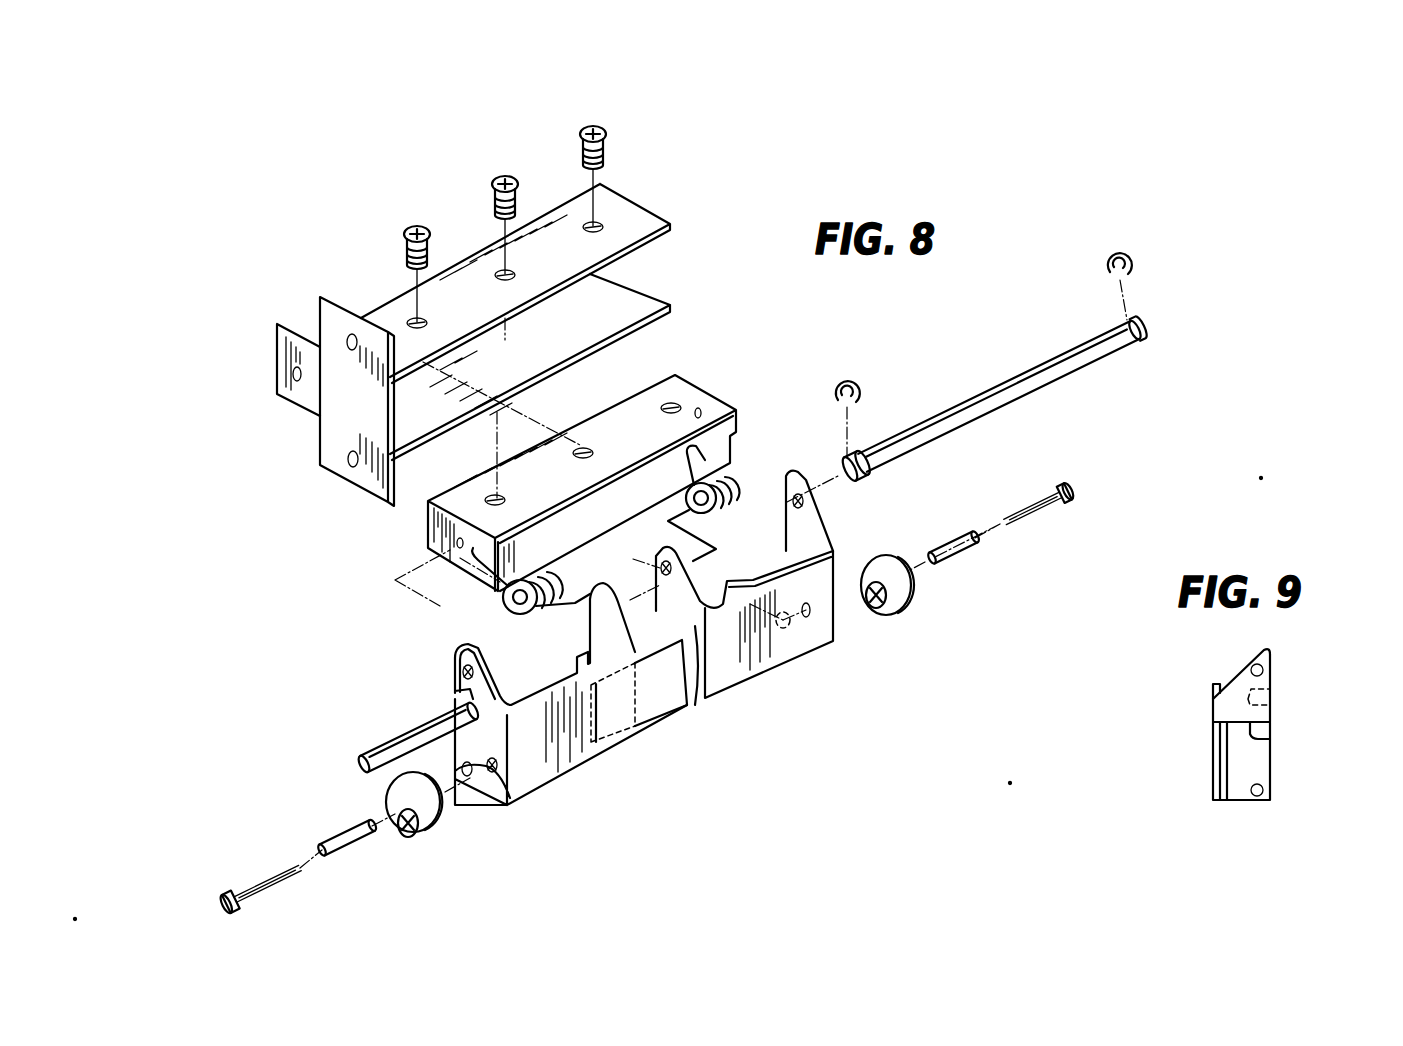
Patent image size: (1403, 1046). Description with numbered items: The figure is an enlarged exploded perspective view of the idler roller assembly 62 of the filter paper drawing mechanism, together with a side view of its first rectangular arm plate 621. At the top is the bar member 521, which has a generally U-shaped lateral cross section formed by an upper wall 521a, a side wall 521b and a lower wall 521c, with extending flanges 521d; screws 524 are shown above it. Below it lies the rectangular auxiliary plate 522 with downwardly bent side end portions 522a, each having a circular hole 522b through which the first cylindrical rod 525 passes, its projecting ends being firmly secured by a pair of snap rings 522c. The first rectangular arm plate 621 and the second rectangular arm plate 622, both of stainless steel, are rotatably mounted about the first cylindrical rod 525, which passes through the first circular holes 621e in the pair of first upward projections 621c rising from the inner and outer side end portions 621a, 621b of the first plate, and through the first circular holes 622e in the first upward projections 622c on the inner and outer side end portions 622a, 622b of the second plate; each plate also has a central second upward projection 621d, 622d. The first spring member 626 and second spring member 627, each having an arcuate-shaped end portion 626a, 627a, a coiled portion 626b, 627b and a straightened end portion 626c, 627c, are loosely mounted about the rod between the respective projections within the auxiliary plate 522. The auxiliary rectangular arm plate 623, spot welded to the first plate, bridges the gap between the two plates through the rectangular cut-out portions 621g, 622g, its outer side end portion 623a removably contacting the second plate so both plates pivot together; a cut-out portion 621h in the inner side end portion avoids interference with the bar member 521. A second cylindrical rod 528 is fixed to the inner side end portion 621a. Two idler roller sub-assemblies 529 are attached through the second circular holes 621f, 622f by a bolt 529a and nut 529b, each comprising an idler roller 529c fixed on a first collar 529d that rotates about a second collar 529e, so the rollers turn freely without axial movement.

In FIG. 8, the idler roller assembly 62 is at (260, 361).
In FIG. 8, the bar member 521 is at (483, 332).
In FIG. 8, the upper wall 521a is at (632, 200).
In FIG. 8, the side wall 521b is at (327, 393).
In FIG. 8, the lower wall 521c is at (648, 285).
In FIG. 8, the extending flanges 521d is at (318, 298).
In FIG. 8, the auxiliary plate 522 is at (575, 462).
In FIG. 8, the side end portions 522a is at (716, 440).
In FIG. 8, the circular holes 522b is at (700, 408).
In FIG. 8, the snap rings 522c is at (1113, 252).
In FIG. 8, the screw 524 is at (579, 132).
In FIG. 8, the first cylindrical rod 525 is at (1000, 383).
In FIG. 8, the second cylindrical rod 528 is at (378, 752).
In FIG. 8, the idler roller sub-assemblies 529 is at (676, 698).
In FIG. 8, the bolt 529a is at (1036, 501).
In FIG. 8, the nut 529b is at (670, 725).
In FIG. 8, the idler roller 529c is at (911, 594).
In FIG. 8, the first collar 529d is at (878, 607).
In FIG. 8, the second collar 529e is at (950, 548).
In FIG. 8, the first rectangular arm plate 621 is at (513, 674).
In FIG. 9, the first rectangular arm plate 621 is at (1245, 736).
In FIG. 8, the inner side end portion 621a is at (397, 778).
In FIG. 9, the inner side end portion 621a is at (1262, 765).
In FIG. 8, the outer side end portion 621b is at (612, 620).
In FIG. 9, the outer side end portion 621b is at (1265, 717).
In FIG. 8, the first upward projections 621c is at (460, 652).
In FIG. 9, the first upward projections 621c is at (1270, 648).
In FIG. 8, the second upward projection 621d is at (578, 662).
In FIG. 9, the second upward projection 621d is at (1213, 688).
In FIG. 8, the first circular holes 621e is at (465, 670).
In FIG. 9, the first circular holes 621e is at (1264, 668).
In FIG. 8, the second circular hole 621f is at (500, 775).
In FIG. 9, the second circular hole 621f is at (1264, 788).
In FIG. 8, the rectangular cut-out portion 621g is at (597, 640).
In FIG. 9, the rectangular cut-out portion 621g is at (1270, 738).
In FIG. 8, the cut-out portion 621h is at (462, 691).
In FIG. 9, the cut-out portion 621h is at (1268, 695).
In FIG. 8, the second rectangular arm plate 622 is at (740, 574).
In FIG. 8, the inner side end portion 622a is at (697, 640).
In FIG. 8, the outer side end portion 622b is at (812, 548).
In FIG. 8, the first upward projections 622c is at (795, 471).
In FIG. 8, the second upward projection 622d is at (728, 586).
In FIG. 8, the first circular holes 622e is at (660, 566).
In FIG. 8, the second circular hole 622f is at (808, 600).
In FIG. 8, the rectangular cut-out portion 622g is at (712, 660).
In FIG. 8, the auxiliary rectangular arm plate 623 is at (658, 717).
In FIG. 9, the auxiliary rectangular arm plate 623 is at (1227, 800).
In FIG. 8, the outer side end portion 623a is at (680, 705).
In FIG. 8, the first spring member 626 is at (498, 568).
In FIG. 8, the arcuate-shaped end portion 626a is at (471, 558).
In FIG. 8, the coiled portion 626b is at (526, 574).
In FIG. 8, the straightened end portion 626c is at (556, 594).
In FIG. 8, the second spring member 627 is at (723, 487).
In FIG. 8, the arcuate-shaped end portion 627a is at (689, 462).
In FIG. 8, the coiled portion 627b is at (716, 488).
In FIG. 8, the straightened end portion 627c is at (698, 548).